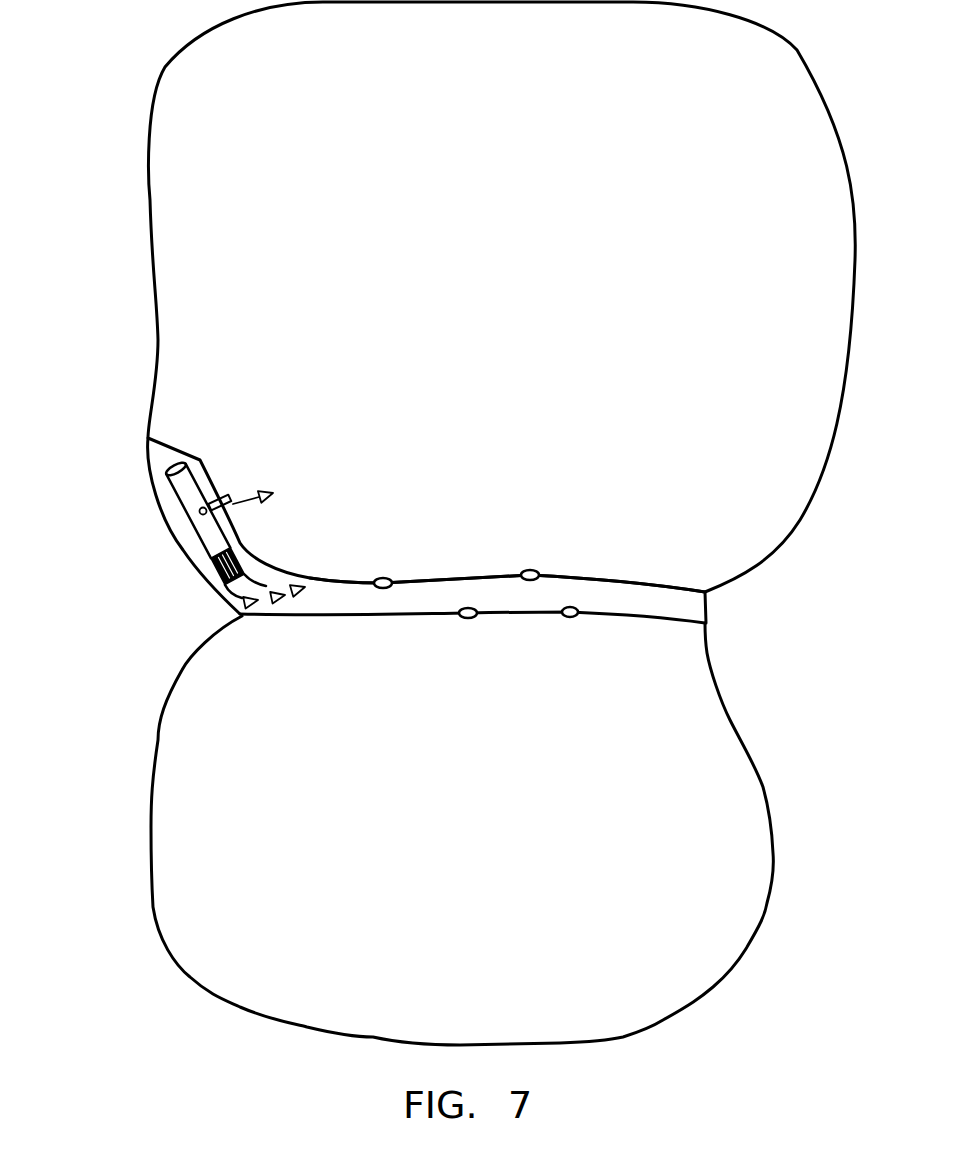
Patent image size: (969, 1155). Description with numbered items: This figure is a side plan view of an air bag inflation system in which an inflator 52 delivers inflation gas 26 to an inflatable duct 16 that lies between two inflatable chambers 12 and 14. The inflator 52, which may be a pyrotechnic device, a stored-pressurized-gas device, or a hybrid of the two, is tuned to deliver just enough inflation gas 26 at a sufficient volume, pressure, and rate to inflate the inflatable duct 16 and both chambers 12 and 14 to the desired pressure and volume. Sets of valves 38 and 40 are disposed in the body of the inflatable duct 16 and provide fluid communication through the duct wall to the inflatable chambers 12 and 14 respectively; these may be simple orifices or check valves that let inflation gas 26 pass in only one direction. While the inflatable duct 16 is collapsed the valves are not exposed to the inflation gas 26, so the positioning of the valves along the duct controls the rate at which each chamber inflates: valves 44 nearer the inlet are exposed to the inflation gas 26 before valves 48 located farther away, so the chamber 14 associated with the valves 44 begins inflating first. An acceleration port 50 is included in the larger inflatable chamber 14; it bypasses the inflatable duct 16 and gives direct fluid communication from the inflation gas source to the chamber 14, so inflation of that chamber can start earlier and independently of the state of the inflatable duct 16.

The inflatable chamber 12 is at (457, 756).
The inflatable chamber 14 is at (457, 384).
The inflatable duct 16 is at (473, 593).
The inflation gas 26 is at (245, 504).
The valves 38 is at (383, 578).
The valves 40 is at (470, 617).
The valves 44 is at (383, 578).
The valves 48 is at (465, 618).
The acceleration port 50 is at (225, 503).
The inflator 52 is at (187, 494).